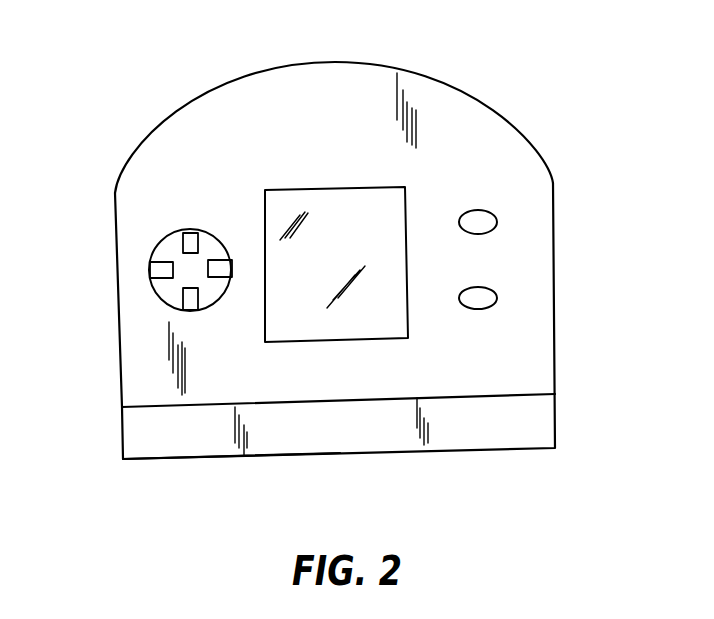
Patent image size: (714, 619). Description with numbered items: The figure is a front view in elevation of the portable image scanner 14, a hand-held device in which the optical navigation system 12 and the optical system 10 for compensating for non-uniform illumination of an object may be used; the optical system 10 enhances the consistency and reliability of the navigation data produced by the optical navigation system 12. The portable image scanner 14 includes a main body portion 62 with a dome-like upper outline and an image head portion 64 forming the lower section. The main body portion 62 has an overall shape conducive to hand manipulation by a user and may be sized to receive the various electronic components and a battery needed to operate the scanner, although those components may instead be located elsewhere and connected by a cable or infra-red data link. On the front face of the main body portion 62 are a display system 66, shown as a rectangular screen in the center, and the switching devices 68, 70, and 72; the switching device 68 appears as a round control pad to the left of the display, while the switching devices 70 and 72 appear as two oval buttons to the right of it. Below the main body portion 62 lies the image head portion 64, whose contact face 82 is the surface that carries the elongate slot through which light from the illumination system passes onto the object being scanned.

The optical system 10 is at (126, 81).
The optical navigation system 12 is at (494, 454).
The portable image scanner 14 is at (331, 59).
The main body portion 62 is at (553, 257).
The image head portion 64 is at (557, 420).
The display system 66 is at (333, 188).
The switching device 68 is at (206, 229).
The switching device 70 is at (478, 210).
The switching device 72 is at (480, 309).
The contact face 82 is at (148, 459).